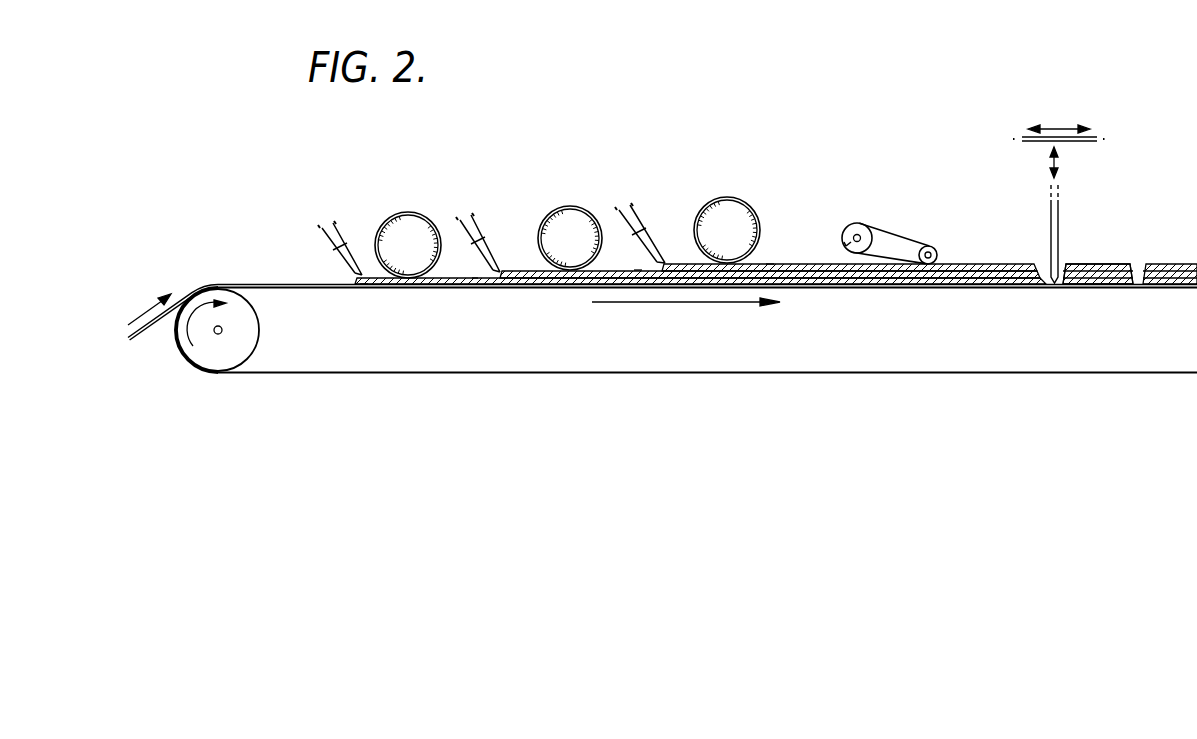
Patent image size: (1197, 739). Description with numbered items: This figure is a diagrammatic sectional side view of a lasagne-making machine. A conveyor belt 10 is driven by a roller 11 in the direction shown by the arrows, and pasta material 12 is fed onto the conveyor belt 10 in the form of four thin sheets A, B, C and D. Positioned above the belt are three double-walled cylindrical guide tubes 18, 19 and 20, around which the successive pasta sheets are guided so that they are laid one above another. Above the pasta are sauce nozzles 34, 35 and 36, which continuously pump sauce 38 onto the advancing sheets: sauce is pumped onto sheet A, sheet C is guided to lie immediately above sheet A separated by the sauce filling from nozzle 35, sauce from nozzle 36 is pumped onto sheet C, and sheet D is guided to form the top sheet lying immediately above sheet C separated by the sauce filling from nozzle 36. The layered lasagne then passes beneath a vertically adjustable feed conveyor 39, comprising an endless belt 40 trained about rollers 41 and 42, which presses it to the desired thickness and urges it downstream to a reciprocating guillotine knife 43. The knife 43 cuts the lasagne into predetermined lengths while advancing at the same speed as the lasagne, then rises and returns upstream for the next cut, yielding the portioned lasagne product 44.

The conveyor belt 10 is at (648, 372).
The roller 11 is at (217, 353).
The pasta material 12 is at (148, 333).
The double-walled cylindrical guide tube 18 is at (408, 232).
The double-walled cylindrical guide tube 19 is at (570, 216).
The double-walled cylindrical guide tube 20 is at (727, 212).
The sauce nozzle 34 is at (318, 214).
The sauce nozzle 35 is at (458, 206).
The sauce nozzle 36 is at (612, 195).
The sauce 38 is at (367, 275).
The feed conveyor 39 is at (921, 190).
The endless belt 40 is at (908, 237).
The roller 41 is at (843, 228).
The roller 42 is at (937, 250).
The reciprocating guillotine knife 43 is at (1060, 124).
The portioned lasagne product 44 is at (1105, 288).
The pasta sheet A is at (473, 277).
The pasta sheet B is at (363, 284).
The pasta sheet C is at (637, 269).
The pasta sheet D is at (770, 263).